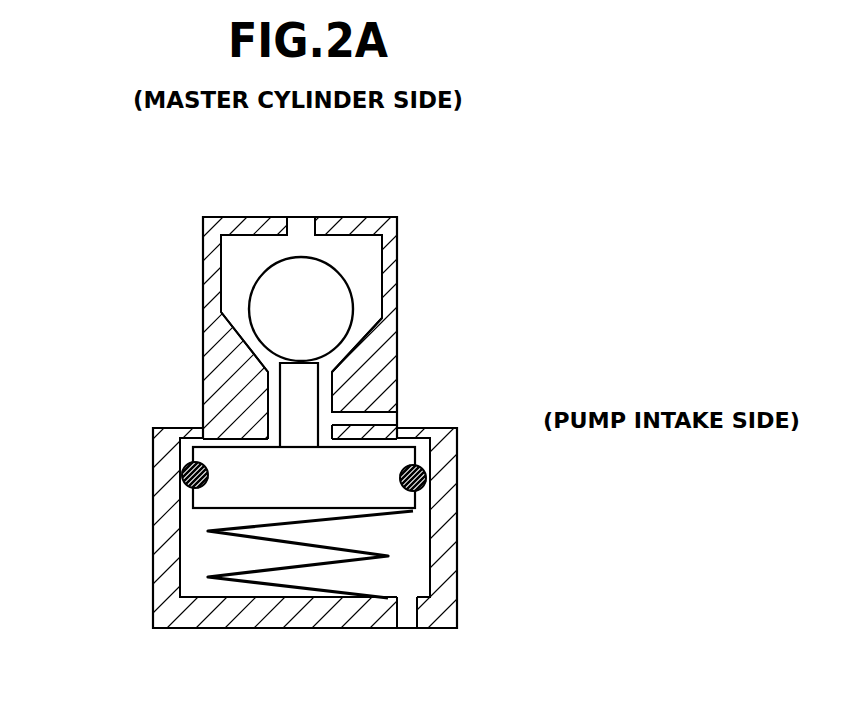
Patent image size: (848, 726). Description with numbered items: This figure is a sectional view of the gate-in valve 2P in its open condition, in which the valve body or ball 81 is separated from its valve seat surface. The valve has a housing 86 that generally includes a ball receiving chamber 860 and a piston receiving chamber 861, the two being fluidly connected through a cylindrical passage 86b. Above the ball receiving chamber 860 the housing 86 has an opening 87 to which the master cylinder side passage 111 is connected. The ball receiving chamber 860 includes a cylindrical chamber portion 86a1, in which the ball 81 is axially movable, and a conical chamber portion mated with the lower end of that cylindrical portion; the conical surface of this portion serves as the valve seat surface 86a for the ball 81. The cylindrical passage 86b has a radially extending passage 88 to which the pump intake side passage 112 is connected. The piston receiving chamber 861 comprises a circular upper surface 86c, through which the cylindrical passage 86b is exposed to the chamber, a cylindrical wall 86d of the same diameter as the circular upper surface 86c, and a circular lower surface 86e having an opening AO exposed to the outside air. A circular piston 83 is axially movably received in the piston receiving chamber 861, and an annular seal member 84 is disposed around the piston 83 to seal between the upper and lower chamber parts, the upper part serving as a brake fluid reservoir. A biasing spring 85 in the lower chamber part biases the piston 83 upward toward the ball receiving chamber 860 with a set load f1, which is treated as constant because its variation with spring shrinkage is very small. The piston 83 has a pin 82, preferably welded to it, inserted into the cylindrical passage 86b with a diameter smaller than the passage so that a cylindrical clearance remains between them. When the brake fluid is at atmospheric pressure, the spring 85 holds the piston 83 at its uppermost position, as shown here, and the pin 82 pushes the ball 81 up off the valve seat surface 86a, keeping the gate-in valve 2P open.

The ball receiving chamber 860 is at (190, 232).
The piston receiving chamber 861 is at (140, 587).
The housing 86 is at (198, 629).
The circular lower surface 86e is at (250, 597).
The opening AO is at (408, 612).
The opening 87 is at (307, 228).
The master cylinder side passage 111 is at (301, 202).
The cylindrical chamber portion 86a1 is at (247, 252).
The valve body (ball) 81 is at (353, 282).
The gate-in valve 2P is at (463, 280).
The valve seat surface 86a is at (248, 338).
The cylindrical passage 86b is at (270, 396).
The circular upper surface 86c is at (217, 440).
The pin 82 is at (337, 383).
The radially extending passage 88 is at (357, 410).
The pump intake side passage 112 is at (363, 421).
The piston 83 is at (225, 463).
The annular seal member 84 is at (428, 485).
The cylindrical wall 86d is at (190, 531).
The biasing spring 85 is at (363, 557).
The set load of the biasing spring f1 is at (296, 548).